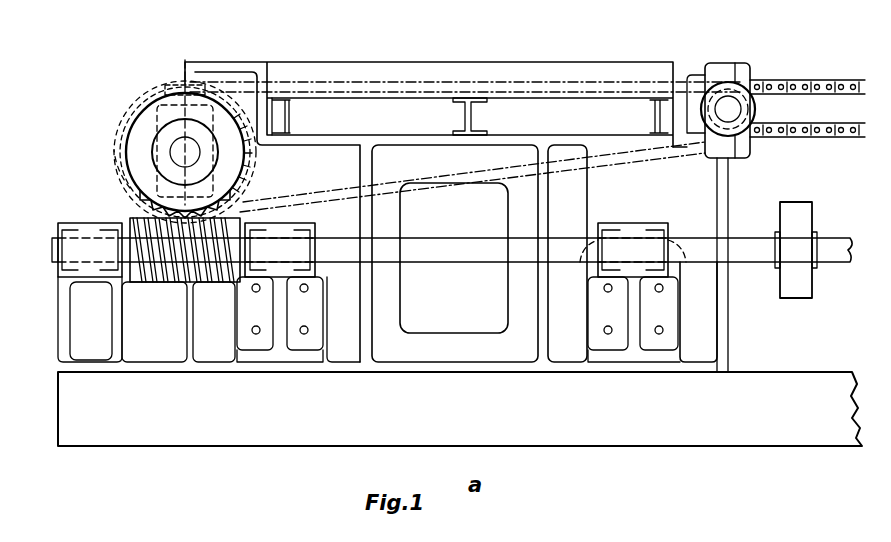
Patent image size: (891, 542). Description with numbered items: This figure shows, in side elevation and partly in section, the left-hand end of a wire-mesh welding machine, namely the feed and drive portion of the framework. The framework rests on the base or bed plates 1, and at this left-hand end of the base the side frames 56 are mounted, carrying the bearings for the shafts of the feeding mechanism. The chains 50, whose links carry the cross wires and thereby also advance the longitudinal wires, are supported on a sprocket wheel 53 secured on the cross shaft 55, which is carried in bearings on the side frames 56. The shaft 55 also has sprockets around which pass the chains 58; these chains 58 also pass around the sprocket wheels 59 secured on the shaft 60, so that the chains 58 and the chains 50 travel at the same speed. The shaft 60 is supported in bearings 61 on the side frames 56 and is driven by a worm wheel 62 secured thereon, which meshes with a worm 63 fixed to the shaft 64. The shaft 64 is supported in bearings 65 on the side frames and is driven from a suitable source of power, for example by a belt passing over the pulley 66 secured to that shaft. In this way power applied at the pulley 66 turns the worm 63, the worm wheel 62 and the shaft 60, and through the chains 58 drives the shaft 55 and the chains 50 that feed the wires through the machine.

The base or bed plates 1 is at (678, 426).
The chains 50 is at (846, 82).
The sprocket wheel 53 is at (757, 70).
The cross shaft 55 is at (735, 112).
The side frames 56 is at (331, 137).
The chains 58 is at (574, 76).
The sprocket wheels 59 is at (167, 84).
The shaft 60 is at (182, 149).
The bearings 61 is at (185, 141).
The worm wheel 62 is at (136, 183).
The worm 63 is at (146, 277).
The shaft 64 is at (428, 255).
The bearings 65 is at (70, 236).
The pulley 66 is at (802, 224).